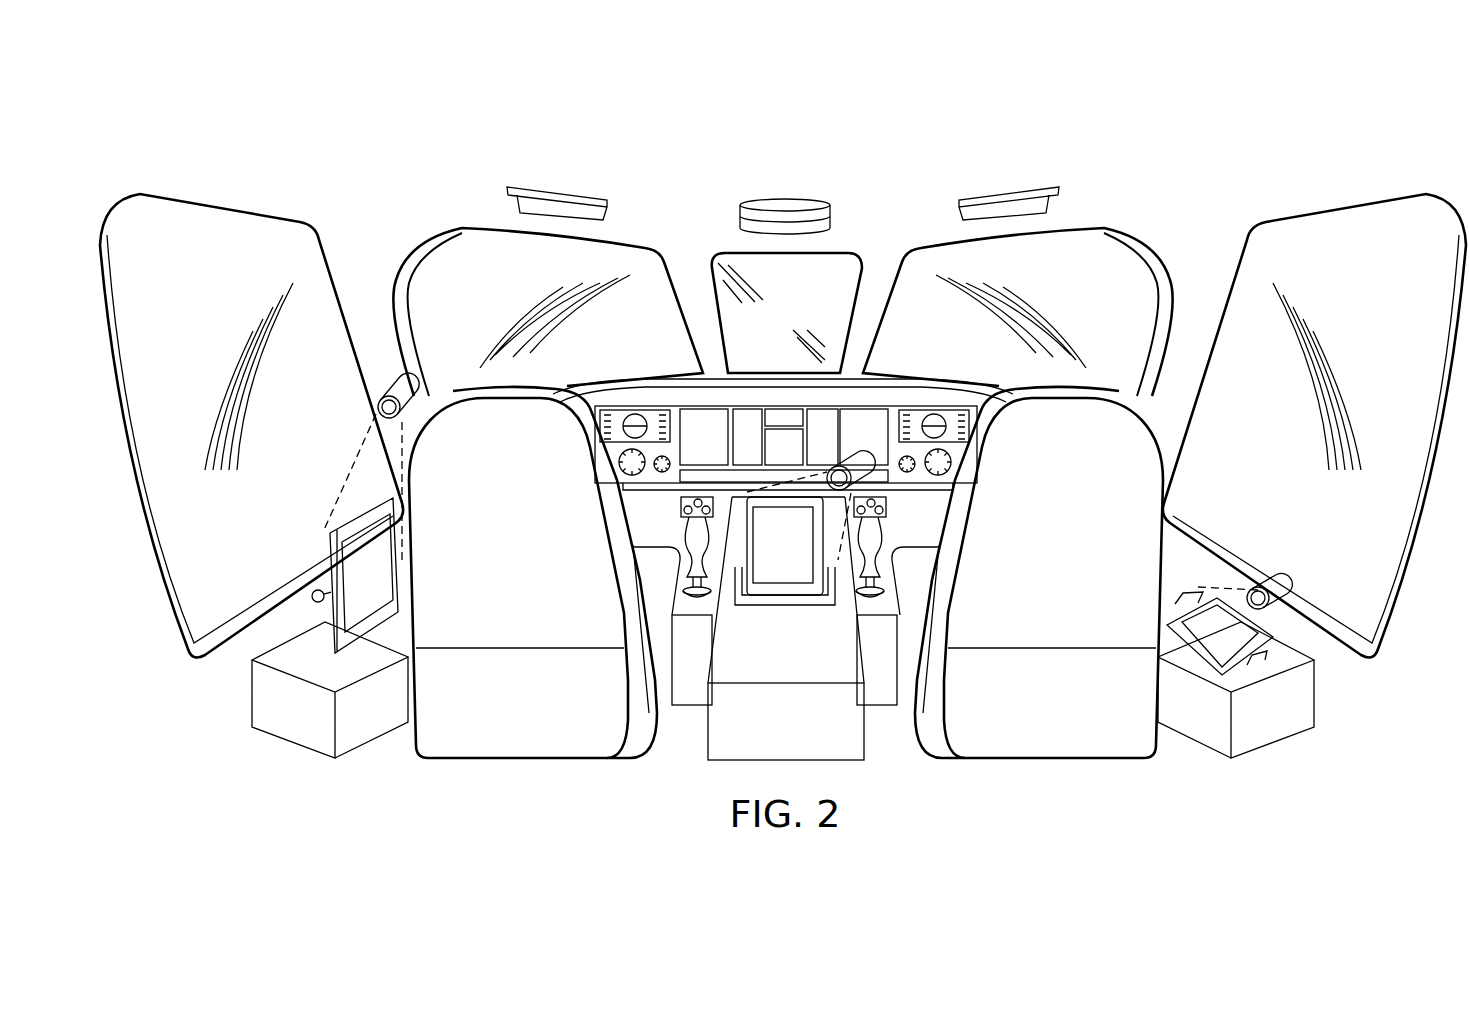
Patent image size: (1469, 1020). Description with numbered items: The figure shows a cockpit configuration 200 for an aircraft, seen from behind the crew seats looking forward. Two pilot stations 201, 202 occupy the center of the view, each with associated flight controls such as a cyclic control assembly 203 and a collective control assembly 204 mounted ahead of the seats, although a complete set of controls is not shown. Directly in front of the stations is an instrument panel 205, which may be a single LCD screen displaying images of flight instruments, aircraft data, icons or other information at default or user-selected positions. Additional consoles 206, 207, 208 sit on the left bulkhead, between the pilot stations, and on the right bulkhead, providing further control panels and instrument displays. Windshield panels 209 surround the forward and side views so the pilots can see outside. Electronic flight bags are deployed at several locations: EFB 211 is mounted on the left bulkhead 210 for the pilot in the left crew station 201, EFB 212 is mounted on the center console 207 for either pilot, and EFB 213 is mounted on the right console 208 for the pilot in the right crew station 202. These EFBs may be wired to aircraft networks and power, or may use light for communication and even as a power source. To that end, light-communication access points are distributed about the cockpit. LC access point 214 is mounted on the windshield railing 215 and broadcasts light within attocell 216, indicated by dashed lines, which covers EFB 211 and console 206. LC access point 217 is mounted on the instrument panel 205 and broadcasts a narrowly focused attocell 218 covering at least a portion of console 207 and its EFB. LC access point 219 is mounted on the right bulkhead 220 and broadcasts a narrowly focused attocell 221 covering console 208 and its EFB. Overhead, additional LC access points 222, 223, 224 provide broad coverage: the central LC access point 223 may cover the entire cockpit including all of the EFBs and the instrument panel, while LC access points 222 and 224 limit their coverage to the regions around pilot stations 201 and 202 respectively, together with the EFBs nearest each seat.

The cockpit configuration 200 is at (1246, 105).
The pilot station 201 is at (475, 497).
The pilot station 202 is at (1048, 497).
The cyclic control assembly 203 is at (680, 505).
The collective control assembly 204 is at (890, 505).
The instrument panel 205 is at (944, 405).
The console 206 is at (265, 717).
The center console 207 is at (763, 737).
The right console 208 is at (1260, 717).
The windshield panel 209 is at (178, 309).
The left bulkhead 210 is at (280, 539).
The EFB 211 is at (330, 560).
The EFB 212 is at (780, 597).
The EFB 213 is at (1205, 678).
The LC access point 214 is at (385, 386).
The windshield railing 215 is at (379, 290).
The attocell 216 is at (352, 467).
The LC access point 217 is at (863, 455).
The attocell 218 is at (793, 485).
The LC access point 219 is at (1273, 584).
The bulkhead 220 is at (1284, 641).
The attocell 221 is at (1231, 585).
The LC access point 222 is at (556, 186).
The LC access point 223 is at (787, 198).
The LC access point 224 is at (1011, 186).